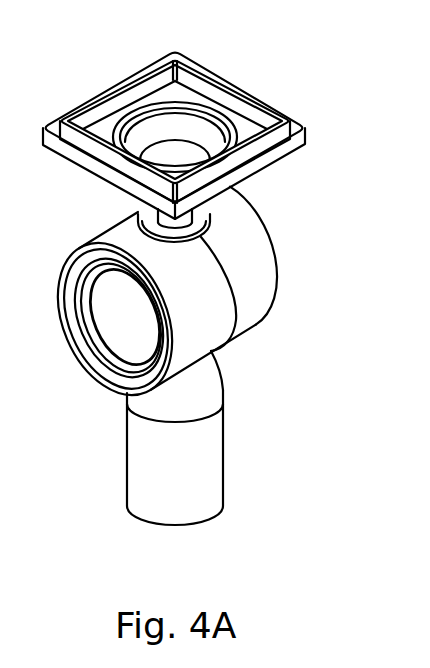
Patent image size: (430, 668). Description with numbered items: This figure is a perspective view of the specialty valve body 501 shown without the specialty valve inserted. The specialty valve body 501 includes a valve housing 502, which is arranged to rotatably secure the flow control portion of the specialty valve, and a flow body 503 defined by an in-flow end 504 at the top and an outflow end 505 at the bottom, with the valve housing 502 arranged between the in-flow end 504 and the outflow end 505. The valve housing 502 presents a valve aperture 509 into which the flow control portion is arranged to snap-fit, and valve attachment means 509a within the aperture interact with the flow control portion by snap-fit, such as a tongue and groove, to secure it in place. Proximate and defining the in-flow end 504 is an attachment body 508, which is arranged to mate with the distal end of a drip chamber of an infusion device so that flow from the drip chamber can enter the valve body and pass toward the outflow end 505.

The specialty valve body 501 is at (370, 239).
The valve housing 502 is at (250, 322).
The flow body 503 is at (143, 443).
The in-flow end 504 is at (130, 65).
The outflow end 505 is at (202, 541).
The attachment body 508 is at (287, 118).
The valve aperture 509 is at (114, 319).
The valve attachment means 509a is at (108, 345).